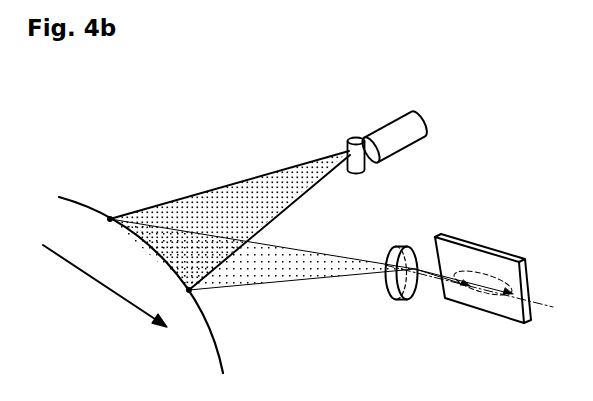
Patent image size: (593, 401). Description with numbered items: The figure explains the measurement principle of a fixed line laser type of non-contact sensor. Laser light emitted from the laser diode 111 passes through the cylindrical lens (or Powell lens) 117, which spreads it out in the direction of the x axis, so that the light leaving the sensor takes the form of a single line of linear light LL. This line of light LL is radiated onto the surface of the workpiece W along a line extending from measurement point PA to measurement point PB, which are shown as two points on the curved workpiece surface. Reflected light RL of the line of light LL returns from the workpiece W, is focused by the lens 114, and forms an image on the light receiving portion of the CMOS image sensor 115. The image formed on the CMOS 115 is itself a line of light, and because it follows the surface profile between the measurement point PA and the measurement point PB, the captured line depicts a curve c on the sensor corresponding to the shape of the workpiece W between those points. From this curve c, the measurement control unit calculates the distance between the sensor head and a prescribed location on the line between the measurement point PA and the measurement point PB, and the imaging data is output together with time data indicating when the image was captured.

The laser diode 111 is at (398, 118).
The cylindrical lens 117 is at (352, 138).
The lens 114 is at (402, 301).
The CMOS image sensor 115 is at (480, 250).
The line of light LL is at (184, 198).
The reflected light RL is at (293, 258).
The measurement point PA is at (101, 231).
The measurement point PB is at (176, 300).
The workpiece W is at (219, 357).
The x axis x is at (105, 286).
The curve c is at (481, 297).